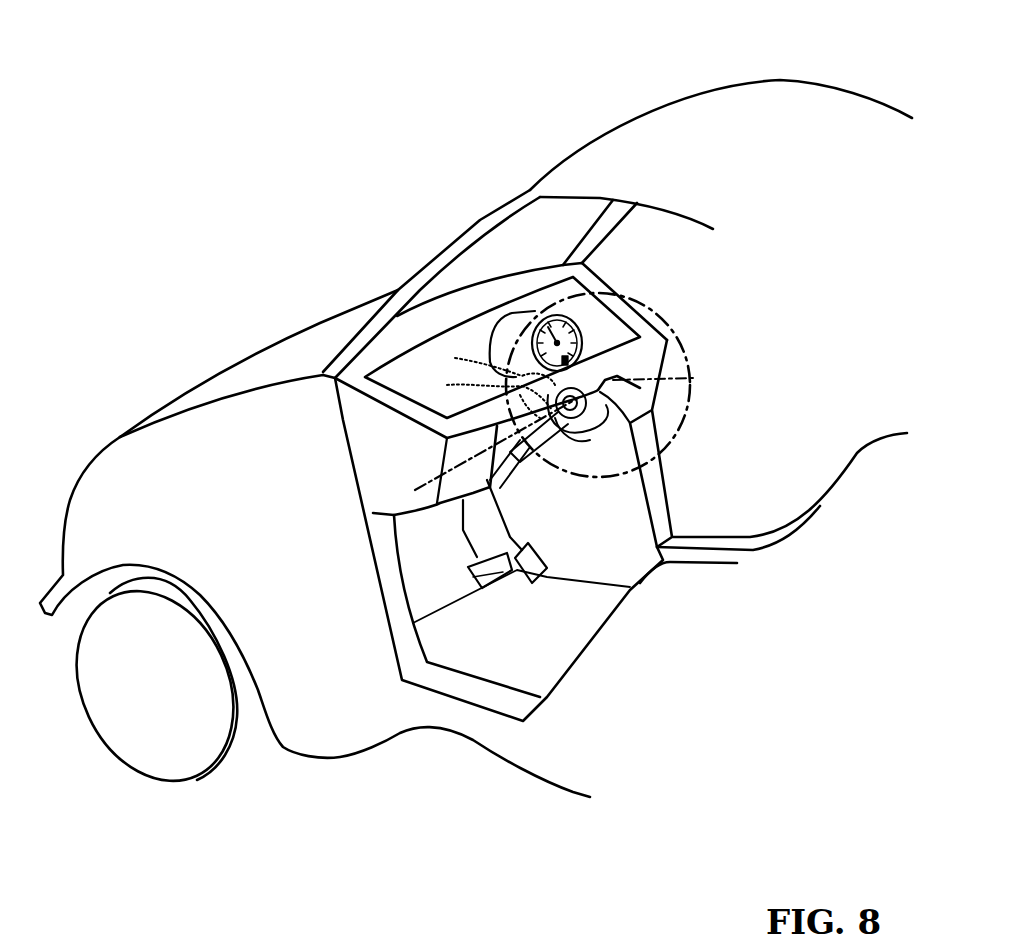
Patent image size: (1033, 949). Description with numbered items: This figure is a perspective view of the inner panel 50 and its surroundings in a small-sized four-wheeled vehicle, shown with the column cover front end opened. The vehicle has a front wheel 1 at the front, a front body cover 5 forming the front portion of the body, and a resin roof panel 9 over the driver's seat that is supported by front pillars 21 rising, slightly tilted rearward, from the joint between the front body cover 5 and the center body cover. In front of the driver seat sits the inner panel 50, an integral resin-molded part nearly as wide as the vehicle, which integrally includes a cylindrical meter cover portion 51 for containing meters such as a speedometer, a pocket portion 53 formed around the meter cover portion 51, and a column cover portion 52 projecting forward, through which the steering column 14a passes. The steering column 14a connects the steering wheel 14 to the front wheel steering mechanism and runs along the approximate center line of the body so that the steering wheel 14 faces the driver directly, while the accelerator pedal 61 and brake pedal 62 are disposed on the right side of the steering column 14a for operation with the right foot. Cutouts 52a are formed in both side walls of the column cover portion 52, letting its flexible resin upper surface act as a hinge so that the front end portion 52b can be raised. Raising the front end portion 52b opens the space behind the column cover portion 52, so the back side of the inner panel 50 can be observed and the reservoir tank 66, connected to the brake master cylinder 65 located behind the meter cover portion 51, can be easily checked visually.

The front wheel 1 is at (240, 743).
The front body cover 5 is at (315, 323).
The roof panel 9 is at (863, 97).
The steering wheel 14 is at (698, 352).
The steering column 14a is at (463, 453).
The front pillar 21 is at (483, 212).
The inner panel 50 is at (603, 285).
The meter cover portion 51 is at (527, 323).
The column cover portion 52 is at (610, 393).
The cutout 52a is at (535, 432).
The front end portion 52b is at (574, 460).
The pocket portion 53 is at (477, 333).
The accelerator pedal 61 is at (543, 577).
The brake pedal 62 is at (463, 580).
The brake master cylinder 65 is at (483, 396).
The reservoir tank 66 is at (490, 362).